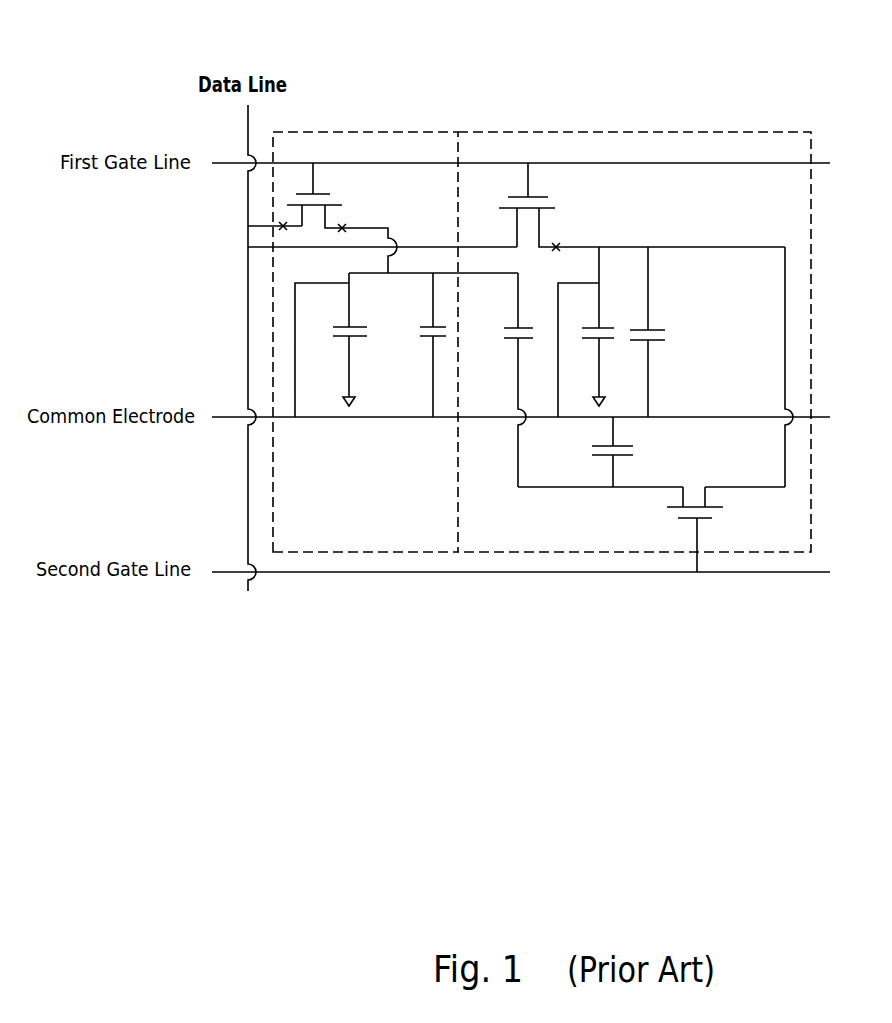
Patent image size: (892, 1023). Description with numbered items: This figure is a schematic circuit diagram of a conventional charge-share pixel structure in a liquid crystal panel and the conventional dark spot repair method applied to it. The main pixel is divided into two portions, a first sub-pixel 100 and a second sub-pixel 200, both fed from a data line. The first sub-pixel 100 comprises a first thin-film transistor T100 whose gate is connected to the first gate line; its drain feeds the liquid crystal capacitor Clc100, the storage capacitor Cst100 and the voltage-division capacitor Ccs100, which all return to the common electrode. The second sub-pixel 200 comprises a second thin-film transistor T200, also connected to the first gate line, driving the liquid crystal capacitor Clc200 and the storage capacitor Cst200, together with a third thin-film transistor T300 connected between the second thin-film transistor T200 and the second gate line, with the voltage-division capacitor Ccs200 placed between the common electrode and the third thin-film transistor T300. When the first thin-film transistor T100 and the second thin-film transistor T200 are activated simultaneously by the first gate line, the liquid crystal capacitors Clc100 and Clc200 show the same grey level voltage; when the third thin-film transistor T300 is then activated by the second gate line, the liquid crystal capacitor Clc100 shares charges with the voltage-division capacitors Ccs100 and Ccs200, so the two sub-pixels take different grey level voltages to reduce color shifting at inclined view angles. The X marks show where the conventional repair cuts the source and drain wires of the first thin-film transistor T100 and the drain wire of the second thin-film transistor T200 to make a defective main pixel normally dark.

The first sub-pixel 100 is at (365, 130).
The second sub-pixel 200 is at (612, 132).
The first thin-film transistor T100 is at (338, 218).
The second thin-film transistor T200 is at (642, 207).
The third thin-film transistor T300 is at (719, 516).
The liquid crystal capacitor of the first sub-pixel Clc100 is at (331, 345).
The storage capacitor of the first sub-pixel Cst100 is at (414, 345).
The voltage-division capacitor Ccs100 is at (500, 380).
The liquid crystal capacitor of the second sub-pixel Clc200 is at (605, 332).
The storage capacitor of the second sub-pixel Cst200 is at (666, 332).
The voltage-division capacitor Ccs200 is at (651, 452).